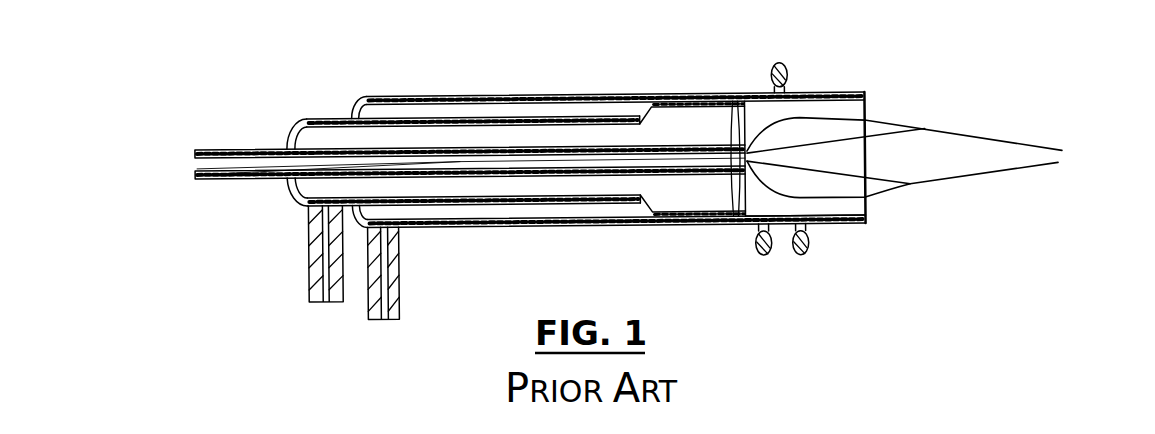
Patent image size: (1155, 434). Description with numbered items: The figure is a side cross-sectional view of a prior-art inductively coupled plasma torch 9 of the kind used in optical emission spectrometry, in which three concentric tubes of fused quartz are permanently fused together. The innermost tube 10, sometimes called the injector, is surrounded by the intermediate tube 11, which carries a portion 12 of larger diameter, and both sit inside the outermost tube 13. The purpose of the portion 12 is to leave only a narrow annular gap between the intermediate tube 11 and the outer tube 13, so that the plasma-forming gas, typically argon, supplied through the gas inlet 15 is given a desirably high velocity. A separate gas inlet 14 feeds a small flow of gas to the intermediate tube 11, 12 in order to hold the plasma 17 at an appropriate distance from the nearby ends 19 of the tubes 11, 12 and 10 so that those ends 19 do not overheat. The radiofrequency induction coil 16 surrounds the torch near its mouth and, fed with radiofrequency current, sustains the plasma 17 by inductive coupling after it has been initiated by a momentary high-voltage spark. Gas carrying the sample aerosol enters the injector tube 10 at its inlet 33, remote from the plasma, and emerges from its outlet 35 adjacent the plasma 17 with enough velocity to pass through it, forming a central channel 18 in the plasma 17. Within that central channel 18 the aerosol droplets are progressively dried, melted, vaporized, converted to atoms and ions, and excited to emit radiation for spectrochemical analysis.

The torch 9 is at (487, 80).
The injector tube 10 is at (247, 147).
The intermediate tube 11 is at (332, 116).
The portion of larger diameter 12 is at (697, 95).
The outer tube 13 is at (825, 95).
The gas inlet 14 is at (307, 266).
The gas inlet 15 is at (398, 289).
The radiofrequency induction coil 16 is at (767, 259).
The plasma 17 is at (835, 227).
The central channel 18 is at (843, 161).
The ends of tubes 19 is at (736, 220).
The inlet 33 is at (196, 162).
The outlet 35 is at (733, 103).